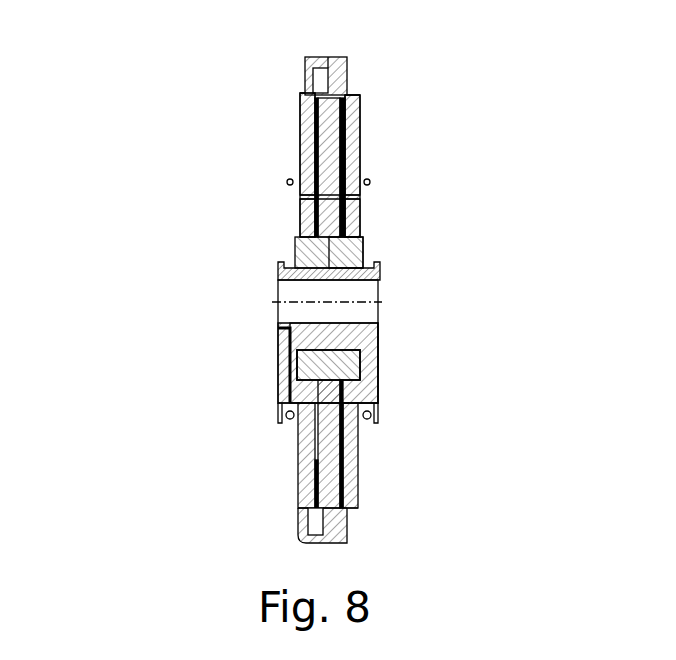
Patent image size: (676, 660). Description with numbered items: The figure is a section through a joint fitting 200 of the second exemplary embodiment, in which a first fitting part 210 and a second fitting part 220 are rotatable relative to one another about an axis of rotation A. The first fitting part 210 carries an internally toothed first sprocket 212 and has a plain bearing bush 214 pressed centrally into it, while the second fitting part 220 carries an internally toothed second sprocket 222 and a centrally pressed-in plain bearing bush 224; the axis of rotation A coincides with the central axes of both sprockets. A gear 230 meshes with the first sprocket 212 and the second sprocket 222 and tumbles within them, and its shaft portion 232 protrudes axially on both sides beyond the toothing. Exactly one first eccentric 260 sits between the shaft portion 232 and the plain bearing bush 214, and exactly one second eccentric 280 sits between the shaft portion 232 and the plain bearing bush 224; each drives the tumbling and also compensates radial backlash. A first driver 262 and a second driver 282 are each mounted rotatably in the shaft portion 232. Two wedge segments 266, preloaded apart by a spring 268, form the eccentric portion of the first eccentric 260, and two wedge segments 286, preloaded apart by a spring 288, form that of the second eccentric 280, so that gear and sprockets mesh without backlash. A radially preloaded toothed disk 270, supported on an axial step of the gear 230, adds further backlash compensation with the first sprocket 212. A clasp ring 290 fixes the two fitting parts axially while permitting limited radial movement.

The joint fitting 200 is at (143, 162).
The clasp ring 290 is at (301, 66).
The first sprocket 212 is at (300, 100).
The disk 270 is at (315, 127).
The first fitting part 210 is at (300, 157).
The spring 268 is at (287, 183).
The plain bearing bush 214 is at (300, 205).
The wedge segments 266 is at (295, 241).
The shaft portion 232 is at (279, 263).
The second sprocket 222 is at (360, 99).
The gear 230 is at (342, 128).
The second fitting part 220 is at (360, 157).
The spring 288 is at (370, 183).
The plain bearing bush 224 is at (360, 205).
The wedge segments 286 is at (363, 241).
The axis of rotation A is at (382, 304).
The second driver 282 is at (378, 370).
The first driver 262 is at (279, 382).
The first eccentric 260 is at (272, 424).
The second eccentric 280 is at (382, 425).